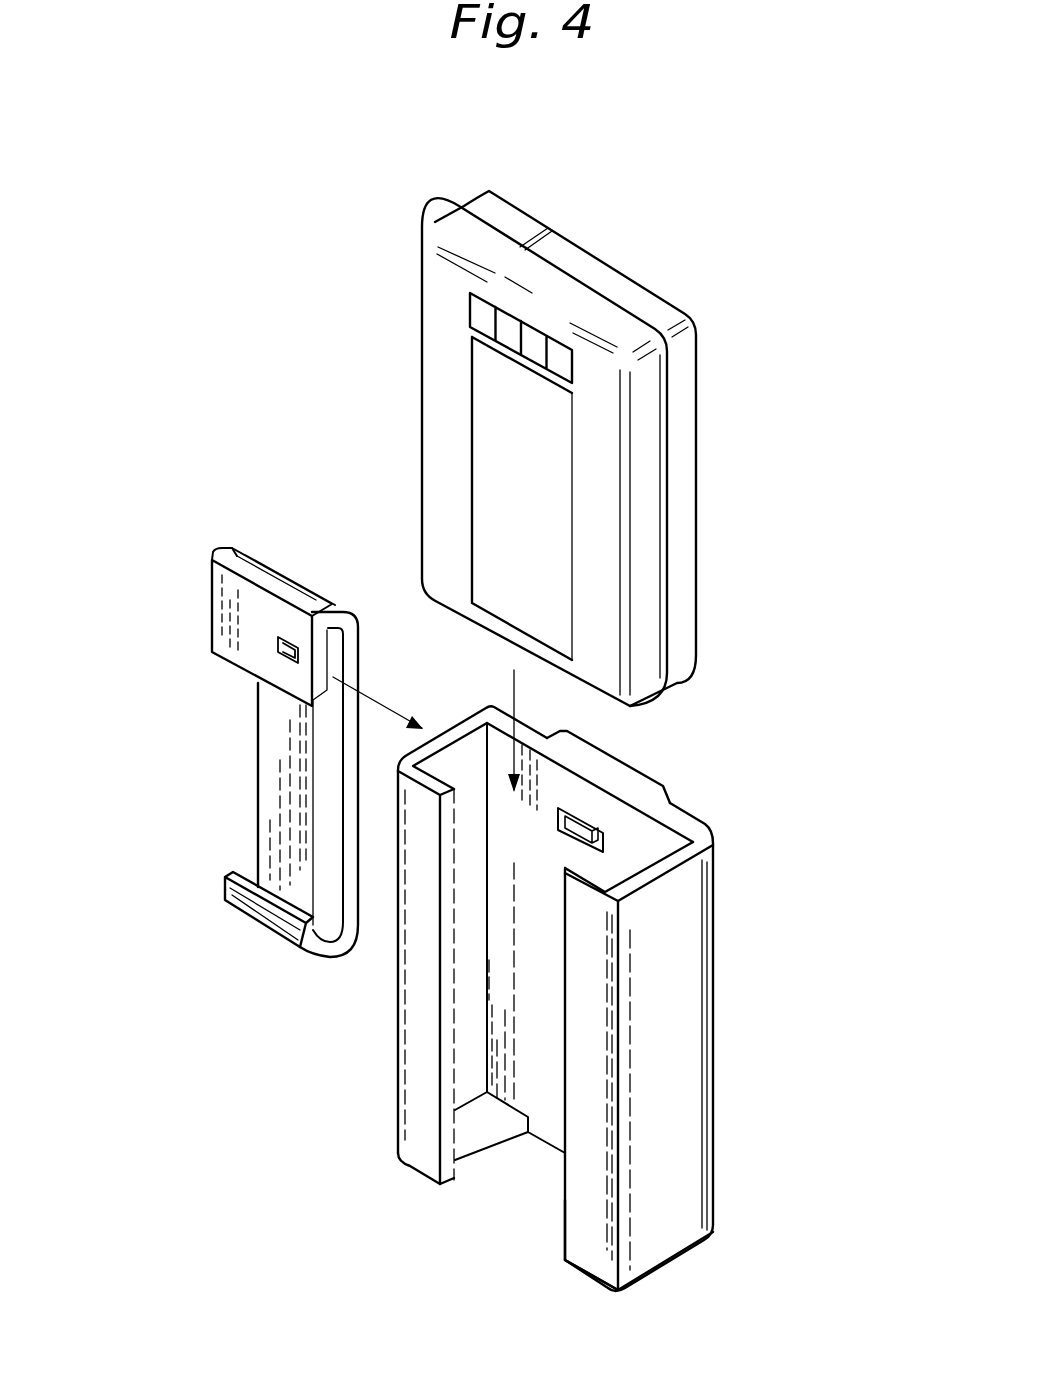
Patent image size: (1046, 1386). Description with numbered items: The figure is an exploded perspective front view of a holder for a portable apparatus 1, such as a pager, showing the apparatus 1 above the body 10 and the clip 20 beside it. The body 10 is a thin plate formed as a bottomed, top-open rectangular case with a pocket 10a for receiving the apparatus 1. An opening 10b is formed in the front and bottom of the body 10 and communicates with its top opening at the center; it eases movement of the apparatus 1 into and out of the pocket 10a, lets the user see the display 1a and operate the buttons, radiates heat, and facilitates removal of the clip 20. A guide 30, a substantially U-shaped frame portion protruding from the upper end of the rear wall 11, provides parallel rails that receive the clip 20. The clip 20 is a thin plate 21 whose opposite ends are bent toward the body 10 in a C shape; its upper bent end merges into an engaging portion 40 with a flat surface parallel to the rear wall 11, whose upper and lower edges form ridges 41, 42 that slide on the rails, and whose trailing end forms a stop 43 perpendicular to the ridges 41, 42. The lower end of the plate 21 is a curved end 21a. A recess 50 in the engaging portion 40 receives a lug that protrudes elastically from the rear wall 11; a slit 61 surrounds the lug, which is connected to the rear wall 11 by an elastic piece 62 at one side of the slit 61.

The portable apparatus 1 is at (637, 238).
The display 1a is at (527, 508).
The body 10 is at (736, 1064).
The pocket 10a is at (543, 1053).
The opening 10b is at (556, 1210).
The rear wall 11 is at (497, 942).
The clip 20 is at (216, 797).
The plate 21 is at (268, 830).
The curved end 21a is at (252, 910).
The guide 30 is at (646, 764).
The engaging portion 40 is at (211, 616).
The ridge 41 is at (257, 580).
The ridge 42 is at (243, 662).
The stop 43 is at (212, 582).
The recess 50 is at (288, 638).
The slit 61 is at (592, 826).
The elastic piece 62 is at (600, 849).